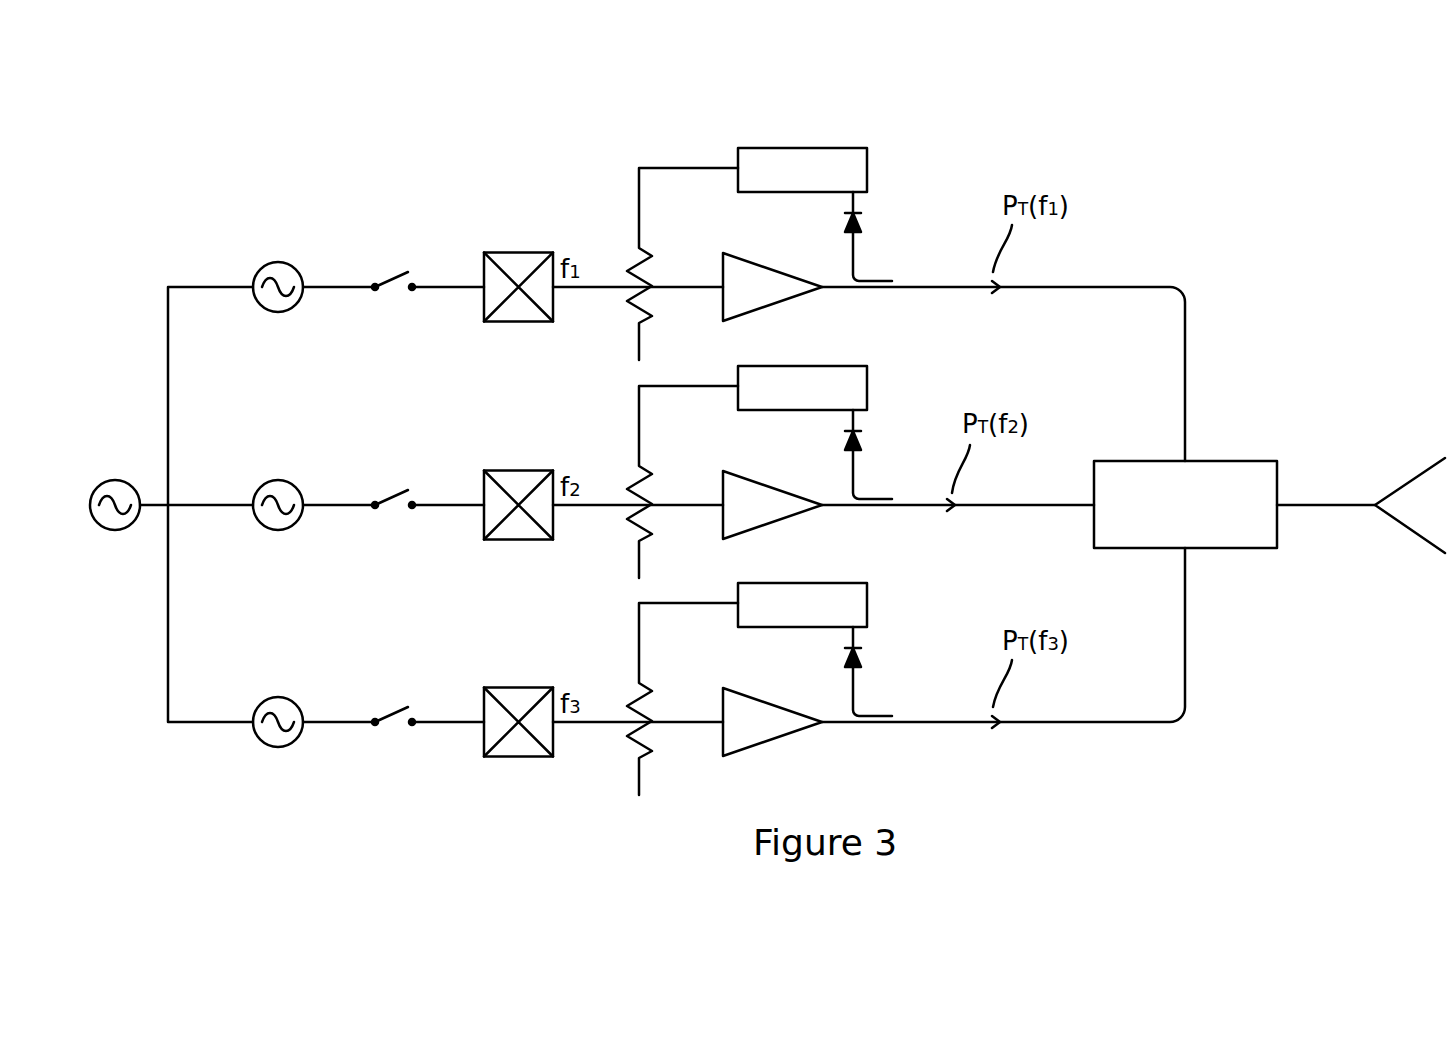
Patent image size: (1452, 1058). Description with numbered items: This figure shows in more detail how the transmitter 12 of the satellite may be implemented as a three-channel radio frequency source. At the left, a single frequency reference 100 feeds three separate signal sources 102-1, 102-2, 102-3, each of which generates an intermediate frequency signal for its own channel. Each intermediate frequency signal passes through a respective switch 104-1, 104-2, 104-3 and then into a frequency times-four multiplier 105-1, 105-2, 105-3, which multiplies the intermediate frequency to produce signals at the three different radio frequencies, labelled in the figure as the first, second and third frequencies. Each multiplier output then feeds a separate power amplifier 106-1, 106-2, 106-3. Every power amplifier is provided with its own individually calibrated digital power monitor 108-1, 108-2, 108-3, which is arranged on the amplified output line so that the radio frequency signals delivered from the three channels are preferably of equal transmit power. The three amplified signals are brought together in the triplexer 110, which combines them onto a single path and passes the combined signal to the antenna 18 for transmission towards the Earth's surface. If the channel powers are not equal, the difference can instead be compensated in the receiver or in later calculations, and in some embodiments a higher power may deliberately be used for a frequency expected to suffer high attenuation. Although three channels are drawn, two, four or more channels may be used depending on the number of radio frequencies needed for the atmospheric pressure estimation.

The transmitter 12 is at (1108, 132).
The antenna 18 is at (1410, 478).
The frequency reference 100 is at (115, 530).
The signal source 102-1 is at (268, 262).
The signal source 102-2 is at (268, 480).
The signal source 102-3 is at (268, 697).
The switch 104-1 is at (395, 288).
The switch 104-2 is at (395, 506).
The switch 104-3 is at (395, 723).
The frequency ×4 multiplier 105-1 is at (517, 322).
The frequency ×4 multiplier 105-2 is at (517, 540).
The frequency ×4 multiplier 105-3 is at (517, 757).
The power amplifier 106-1 is at (748, 260).
The power amplifier 106-2 is at (748, 478).
The power amplifier 106-3 is at (748, 695).
The digital power monitor 108-1 is at (867, 158).
The digital power monitor 108-2 is at (867, 376).
The digital power monitor 108-3 is at (867, 593).
The triplexer 110 is at (1228, 548).